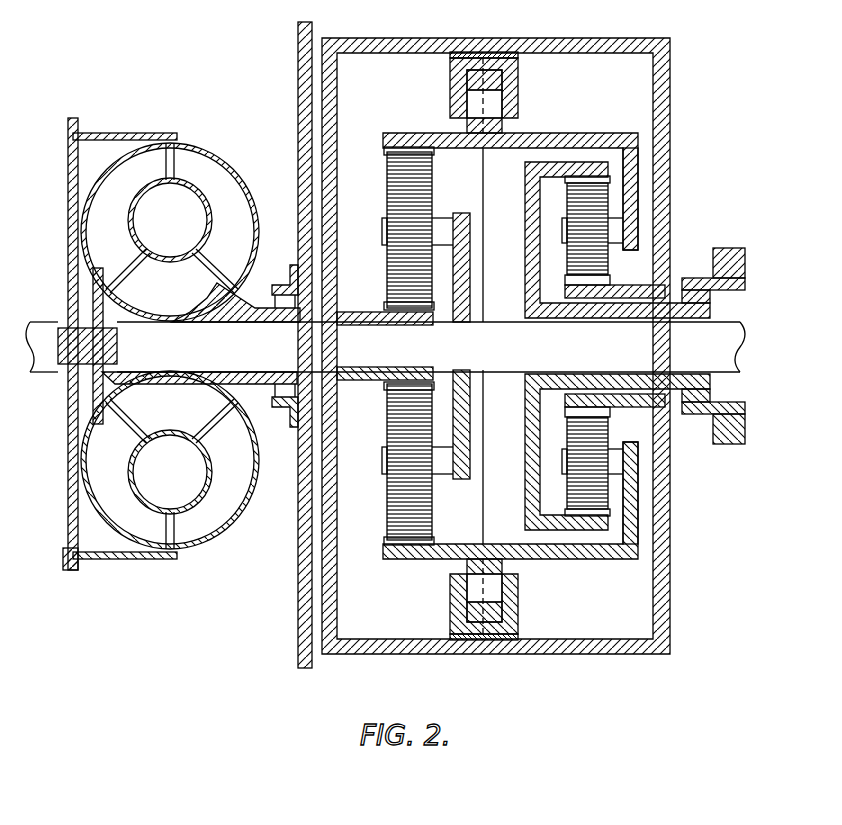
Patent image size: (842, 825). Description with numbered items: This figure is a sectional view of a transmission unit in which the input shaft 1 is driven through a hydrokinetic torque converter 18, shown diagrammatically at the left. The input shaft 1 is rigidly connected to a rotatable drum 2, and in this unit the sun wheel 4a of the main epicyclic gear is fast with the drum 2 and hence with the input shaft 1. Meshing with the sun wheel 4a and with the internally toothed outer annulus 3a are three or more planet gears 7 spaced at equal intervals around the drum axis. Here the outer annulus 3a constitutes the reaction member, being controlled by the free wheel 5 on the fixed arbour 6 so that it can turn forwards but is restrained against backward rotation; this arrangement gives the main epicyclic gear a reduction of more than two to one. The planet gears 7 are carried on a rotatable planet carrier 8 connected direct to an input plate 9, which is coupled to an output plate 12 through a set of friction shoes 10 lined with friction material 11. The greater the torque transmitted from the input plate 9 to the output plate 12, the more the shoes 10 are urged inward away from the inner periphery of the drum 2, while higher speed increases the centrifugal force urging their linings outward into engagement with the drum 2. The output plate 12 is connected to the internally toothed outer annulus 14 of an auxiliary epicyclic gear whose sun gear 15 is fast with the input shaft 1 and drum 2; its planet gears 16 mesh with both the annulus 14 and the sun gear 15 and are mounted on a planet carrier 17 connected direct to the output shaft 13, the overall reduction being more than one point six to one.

The input shaft 1 is at (278, 354).
The rotatable drum 2 is at (427, 41).
The outer annulus 3a is at (566, 181).
The sun wheel 4a is at (610, 283).
The free wheel 5 is at (710, 297).
The fixed arbour 6 is at (716, 411).
The planet gears 7 is at (567, 262).
The planet carrier 8 is at (633, 222).
The input plate 9 is at (498, 132).
The friction shoes 10 is at (509, 92).
The friction material 11 is at (478, 46).
The output plate 12 is at (468, 127).
The output shaft 13 is at (620, 354).
The internally toothed outer annulus 14 is at (384, 150).
The sun gear 15 is at (384, 305).
The planet gears 16 is at (387, 206).
The planet carrier 17 is at (462, 213).
The hydrokinetic torque converter 18 is at (222, 164).